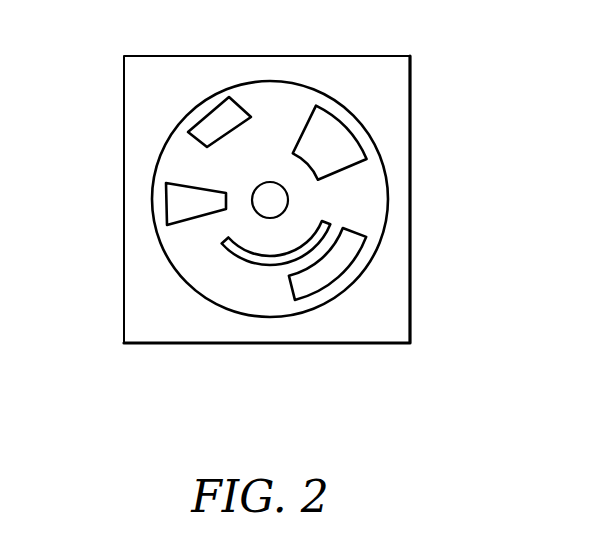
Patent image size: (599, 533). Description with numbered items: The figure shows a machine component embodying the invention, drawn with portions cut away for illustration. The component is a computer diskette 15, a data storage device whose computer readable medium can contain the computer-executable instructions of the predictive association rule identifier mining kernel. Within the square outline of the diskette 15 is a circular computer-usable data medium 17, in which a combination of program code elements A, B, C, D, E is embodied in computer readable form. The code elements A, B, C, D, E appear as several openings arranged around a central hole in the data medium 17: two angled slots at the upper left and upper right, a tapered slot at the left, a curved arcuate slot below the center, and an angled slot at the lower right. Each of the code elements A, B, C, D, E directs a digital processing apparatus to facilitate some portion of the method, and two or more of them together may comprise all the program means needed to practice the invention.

The computer diskette 15 is at (410, 158).
The computer-usable data medium 17 is at (370, 213).
The program code element A is at (340, 140).
The program code element B is at (220, 120).
The program code element C is at (173, 204).
The program code element D is at (253, 259).
The program code element E is at (333, 267).